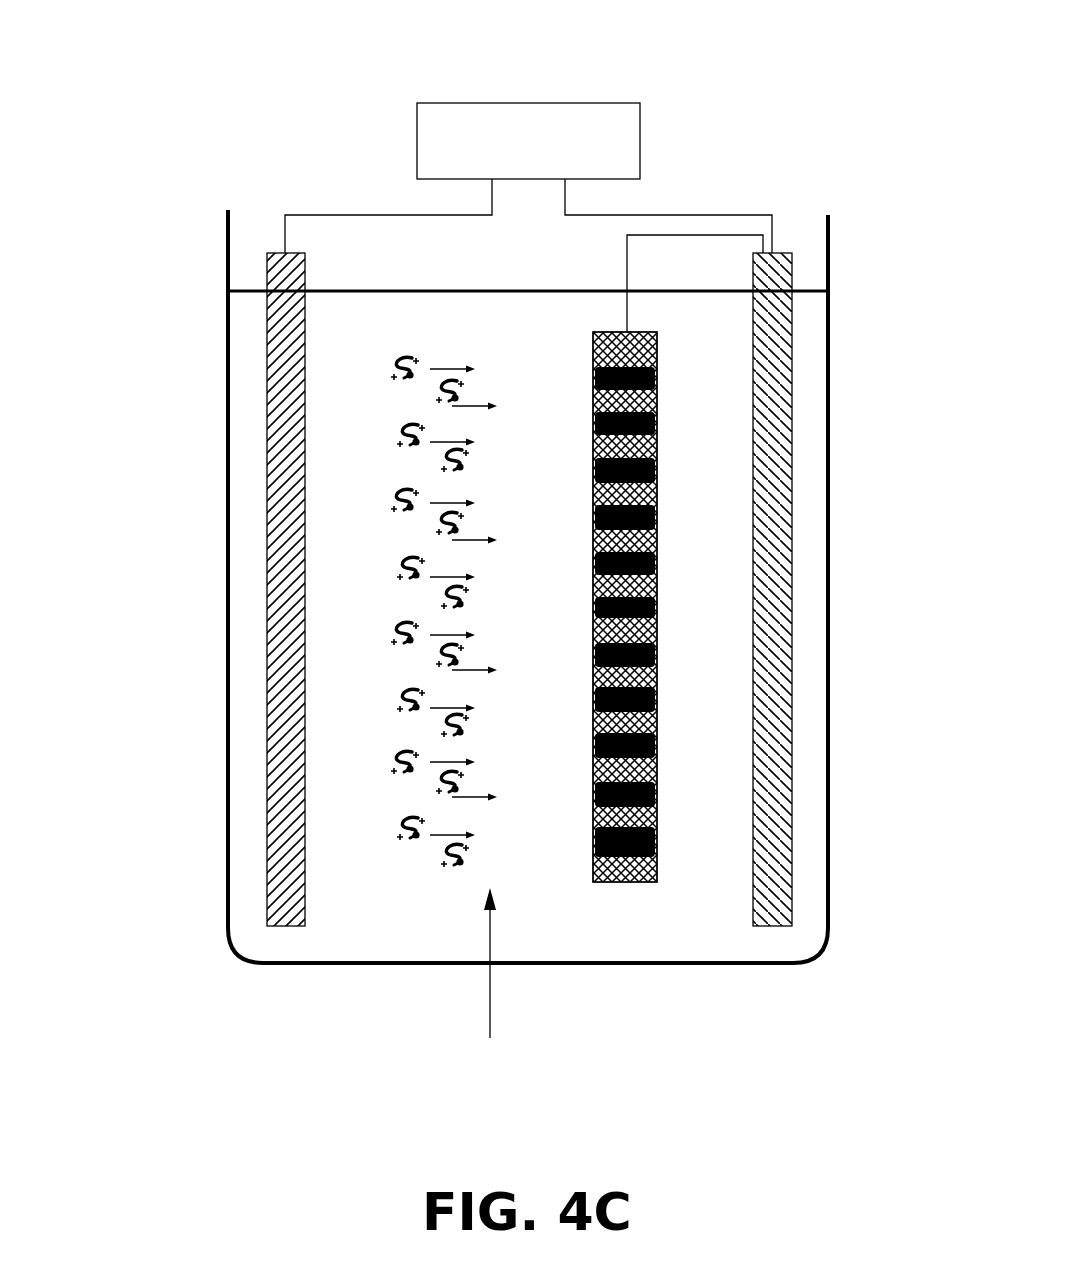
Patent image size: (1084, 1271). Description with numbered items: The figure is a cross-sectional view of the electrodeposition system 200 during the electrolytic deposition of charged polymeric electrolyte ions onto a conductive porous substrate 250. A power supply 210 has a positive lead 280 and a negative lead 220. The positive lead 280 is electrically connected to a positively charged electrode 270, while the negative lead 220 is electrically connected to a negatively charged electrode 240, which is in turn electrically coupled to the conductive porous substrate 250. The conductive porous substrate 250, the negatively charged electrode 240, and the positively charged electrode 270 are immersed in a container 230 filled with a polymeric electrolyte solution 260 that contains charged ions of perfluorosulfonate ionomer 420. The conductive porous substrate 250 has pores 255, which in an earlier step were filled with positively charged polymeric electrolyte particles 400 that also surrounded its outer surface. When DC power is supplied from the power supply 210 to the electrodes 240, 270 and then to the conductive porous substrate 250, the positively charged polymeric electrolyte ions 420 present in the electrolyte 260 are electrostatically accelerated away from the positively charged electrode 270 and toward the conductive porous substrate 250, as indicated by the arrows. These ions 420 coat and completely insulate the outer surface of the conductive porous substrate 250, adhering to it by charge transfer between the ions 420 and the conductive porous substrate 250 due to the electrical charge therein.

The electrodeposition system 200 is at (167, 363).
The power supply 210 is at (563, 103).
The negative lead 220 is at (670, 215).
The container 230 is at (830, 392).
The negatively charged electrode 240 is at (790, 682).
The conductive porous substrate 250 is at (772, 703).
The pores 255 is at (657, 472).
The polymeric electrolyte solution 260 is at (493, 981).
The positively charged electrode 270 is at (265, 682).
The positive lead 280 is at (372, 215).
The positively charged polymeric electrolyte particles 400 is at (655, 843).
The positively charged polymeric electrolyte ions 420 is at (455, 873).